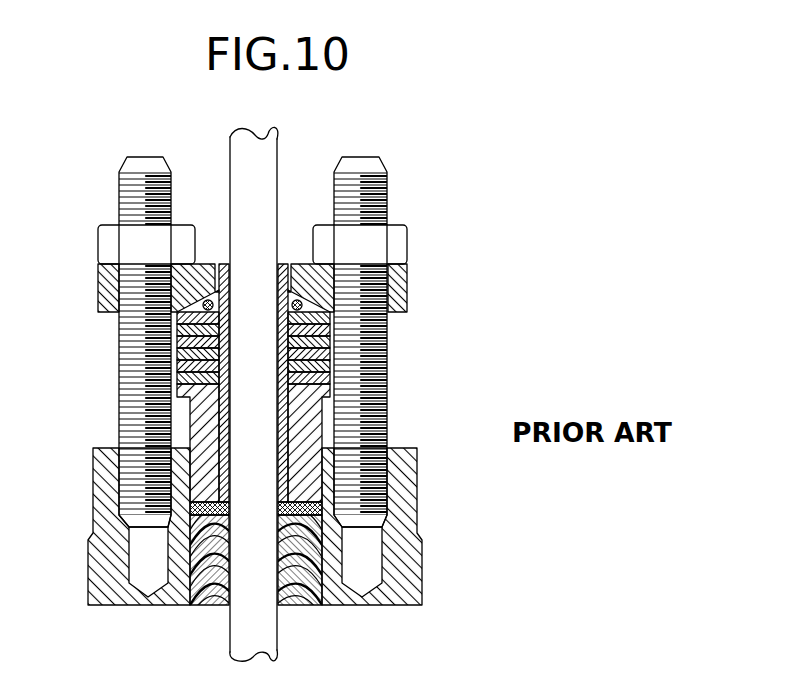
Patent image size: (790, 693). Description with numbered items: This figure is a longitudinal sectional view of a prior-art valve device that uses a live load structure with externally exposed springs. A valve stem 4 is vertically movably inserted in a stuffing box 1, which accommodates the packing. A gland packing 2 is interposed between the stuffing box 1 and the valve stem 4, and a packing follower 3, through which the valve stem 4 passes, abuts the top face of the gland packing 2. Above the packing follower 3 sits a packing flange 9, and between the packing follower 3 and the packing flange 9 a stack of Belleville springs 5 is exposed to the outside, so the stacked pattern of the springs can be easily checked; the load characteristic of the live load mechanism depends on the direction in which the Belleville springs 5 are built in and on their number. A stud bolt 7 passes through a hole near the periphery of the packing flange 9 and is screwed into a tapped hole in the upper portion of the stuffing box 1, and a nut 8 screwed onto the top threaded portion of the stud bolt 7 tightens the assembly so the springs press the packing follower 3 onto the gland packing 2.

The stuffing box 1 is at (422, 553).
The gland packing 2 is at (308, 604).
The packing follower 3 is at (310, 412).
The valve stem 4 is at (272, 145).
The Belleville springs 5 is at (170, 353).
The stud bolt 7 is at (388, 355).
The nut 8 is at (407, 243).
The packing flange 9 is at (407, 292).